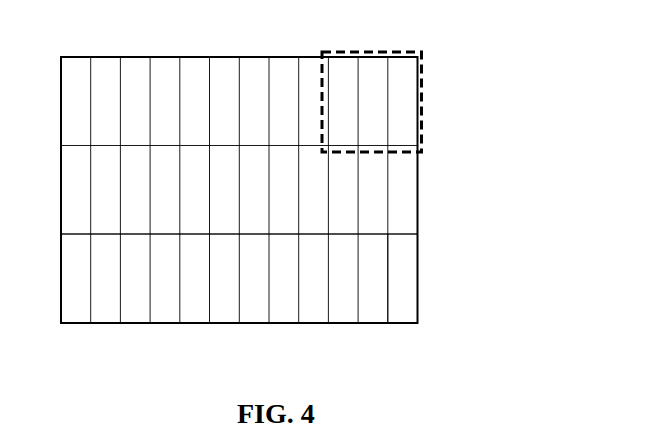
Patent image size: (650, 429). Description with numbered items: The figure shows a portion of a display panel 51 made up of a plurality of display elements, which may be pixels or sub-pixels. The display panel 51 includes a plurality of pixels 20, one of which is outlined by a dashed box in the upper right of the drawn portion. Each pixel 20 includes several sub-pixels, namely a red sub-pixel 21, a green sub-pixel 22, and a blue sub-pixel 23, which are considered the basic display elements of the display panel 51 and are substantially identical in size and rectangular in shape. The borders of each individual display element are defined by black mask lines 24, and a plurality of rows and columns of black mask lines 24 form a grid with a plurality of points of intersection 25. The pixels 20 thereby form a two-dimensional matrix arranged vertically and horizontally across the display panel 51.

The display panel 51 is at (183, 32).
The pixel 20 is at (357, 52).
The red sub-pixel 21 is at (340, 82).
The green sub-pixel 22 is at (377, 92).
The blue sub-pixel 23 is at (401, 135).
The black mask line 24 is at (386, 257).
The point of intersection 25 is at (386, 234).